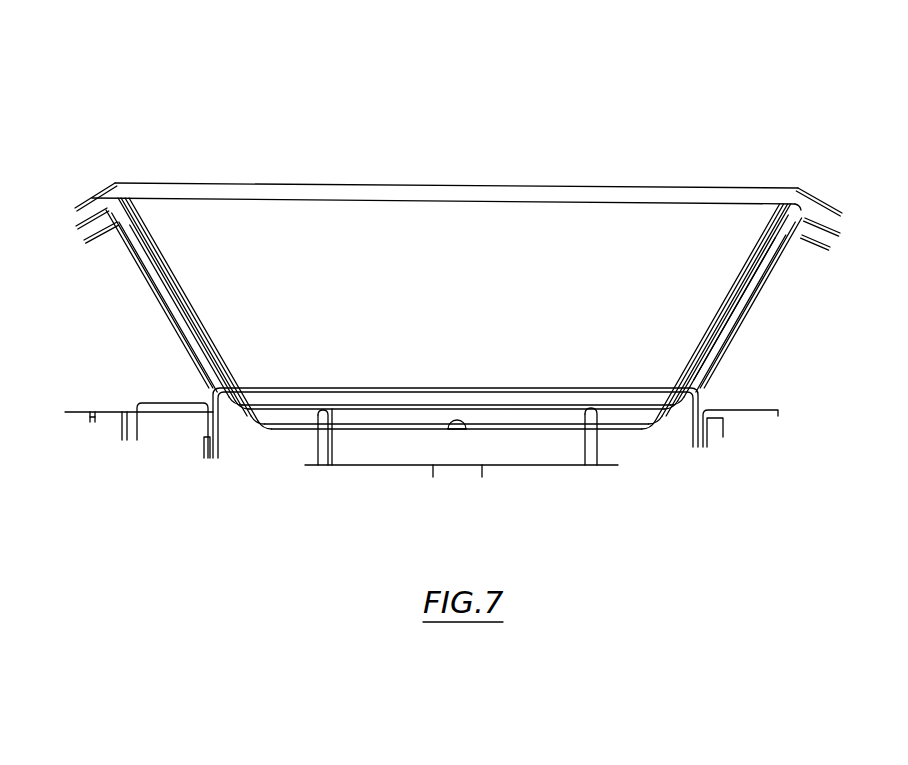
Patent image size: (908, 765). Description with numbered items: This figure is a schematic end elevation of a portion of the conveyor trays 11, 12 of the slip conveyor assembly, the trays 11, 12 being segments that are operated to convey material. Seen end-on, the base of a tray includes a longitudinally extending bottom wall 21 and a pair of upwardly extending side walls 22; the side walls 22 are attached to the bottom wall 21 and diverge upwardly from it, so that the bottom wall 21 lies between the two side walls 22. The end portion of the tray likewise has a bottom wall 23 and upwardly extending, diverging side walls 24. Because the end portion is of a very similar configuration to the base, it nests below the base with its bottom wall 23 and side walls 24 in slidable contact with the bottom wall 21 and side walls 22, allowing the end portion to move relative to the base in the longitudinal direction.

The conveyor tray 11 is at (464, 248).
The conveyor tray 12 is at (433, 182).
The bottom wall 21 is at (507, 388).
The side walls 22 is at (182, 345).
The bottom wall 23 is at (388, 393).
The side walls 24 is at (751, 284).